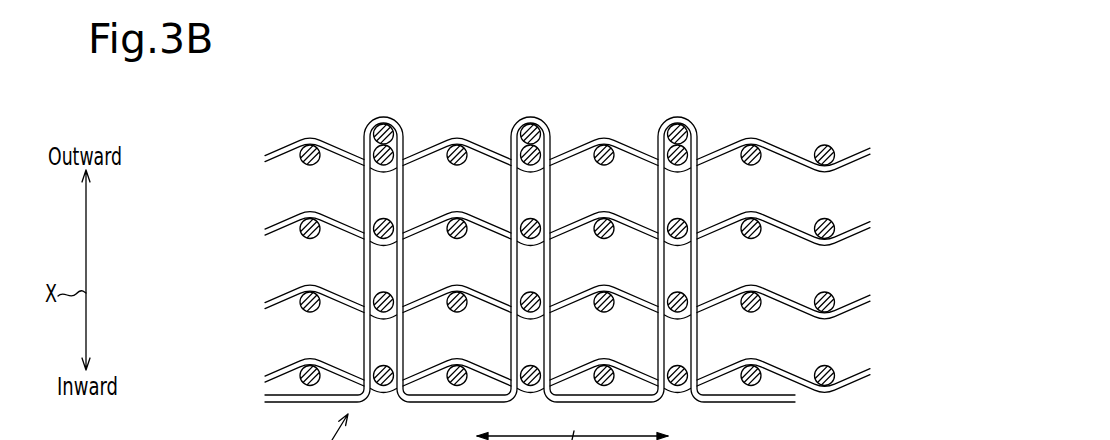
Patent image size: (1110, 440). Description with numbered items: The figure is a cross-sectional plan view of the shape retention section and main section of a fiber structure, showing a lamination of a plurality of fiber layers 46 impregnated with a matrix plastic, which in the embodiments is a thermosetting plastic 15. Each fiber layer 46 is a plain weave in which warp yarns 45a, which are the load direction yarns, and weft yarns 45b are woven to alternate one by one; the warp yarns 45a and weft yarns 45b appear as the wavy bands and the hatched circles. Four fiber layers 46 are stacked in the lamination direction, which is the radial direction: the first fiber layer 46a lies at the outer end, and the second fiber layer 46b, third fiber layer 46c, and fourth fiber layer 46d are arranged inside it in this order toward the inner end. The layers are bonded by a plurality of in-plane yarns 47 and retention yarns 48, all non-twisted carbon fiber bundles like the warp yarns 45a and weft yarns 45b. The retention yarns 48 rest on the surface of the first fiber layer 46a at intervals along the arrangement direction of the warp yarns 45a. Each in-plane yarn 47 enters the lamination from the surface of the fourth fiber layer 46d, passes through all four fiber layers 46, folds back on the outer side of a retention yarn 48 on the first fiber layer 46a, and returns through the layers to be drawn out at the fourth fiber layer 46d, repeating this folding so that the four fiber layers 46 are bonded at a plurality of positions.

The thermosetting plastic 15 is at (472, 270).
The warp yarn 45a is at (306, 151).
The weft yarn 45b is at (465, 137).
The fiber layer 46 is at (508, 266).
The first fiber layer 46a is at (222, 159).
The second fiber layer 46b is at (222, 232).
The third fiber layer 46c is at (222, 306).
The fourth fiber layer 46d is at (222, 380).
The in-plane yarn 47 is at (546, 122).
The retention yarn 48 is at (380, 127).